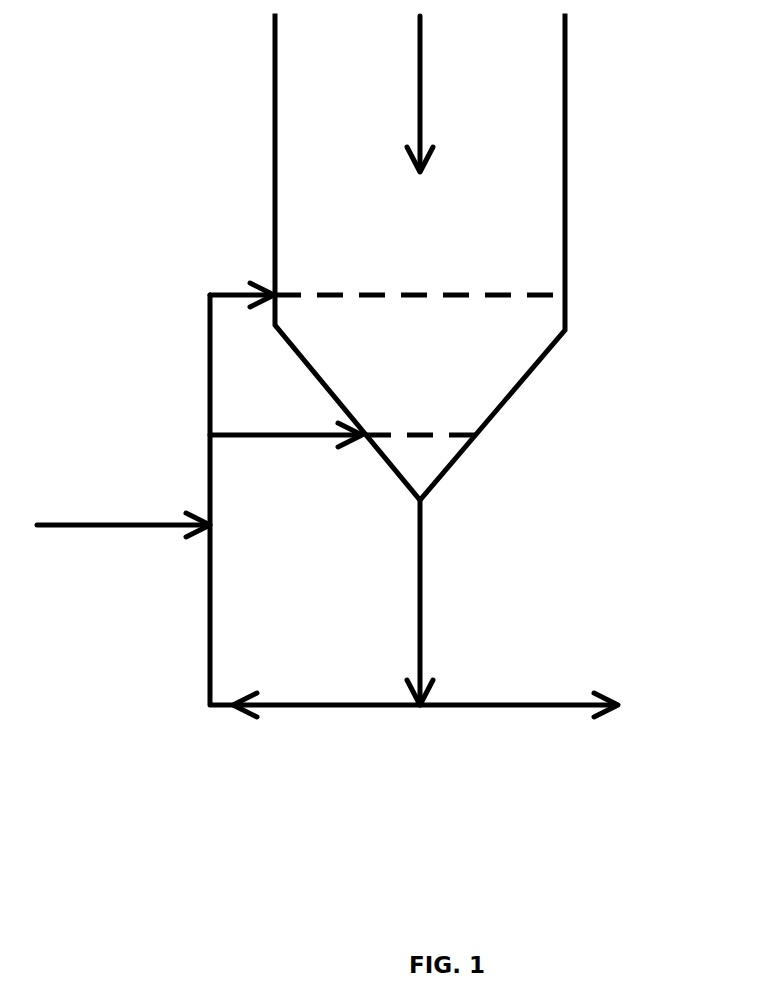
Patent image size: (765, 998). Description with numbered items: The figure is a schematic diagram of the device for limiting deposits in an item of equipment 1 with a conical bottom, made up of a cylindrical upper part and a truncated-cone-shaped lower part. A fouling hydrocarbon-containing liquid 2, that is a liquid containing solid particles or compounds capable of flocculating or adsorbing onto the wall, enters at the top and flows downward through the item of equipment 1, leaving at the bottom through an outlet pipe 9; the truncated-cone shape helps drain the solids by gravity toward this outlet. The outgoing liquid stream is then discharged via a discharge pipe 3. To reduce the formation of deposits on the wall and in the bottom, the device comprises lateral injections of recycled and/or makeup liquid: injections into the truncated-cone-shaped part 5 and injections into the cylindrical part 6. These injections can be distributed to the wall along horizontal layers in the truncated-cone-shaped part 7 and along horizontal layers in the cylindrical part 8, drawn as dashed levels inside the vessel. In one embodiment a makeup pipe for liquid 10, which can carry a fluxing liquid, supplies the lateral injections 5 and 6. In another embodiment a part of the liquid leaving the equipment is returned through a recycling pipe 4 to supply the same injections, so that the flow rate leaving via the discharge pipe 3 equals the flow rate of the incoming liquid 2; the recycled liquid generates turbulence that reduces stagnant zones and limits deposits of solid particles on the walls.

The item of equipment 1 is at (565, 180).
The fouling hydrocarbon-containing liquid 2 is at (420, 80).
The discharge pipe 3 is at (498, 705).
The recycling pipe 4 is at (302, 705).
The injections into the truncated-cone-shaped part 5 is at (250, 435).
The injections into the cylindrical part 6 is at (237, 290).
The horizontal layers in the truncated-cone-shaped part 7 is at (477, 438).
The horizontal layers in the cylindrical part 8 is at (510, 295).
The outlet pipe 9 is at (423, 523).
The makeup pipe for liquid 10 is at (177, 522).